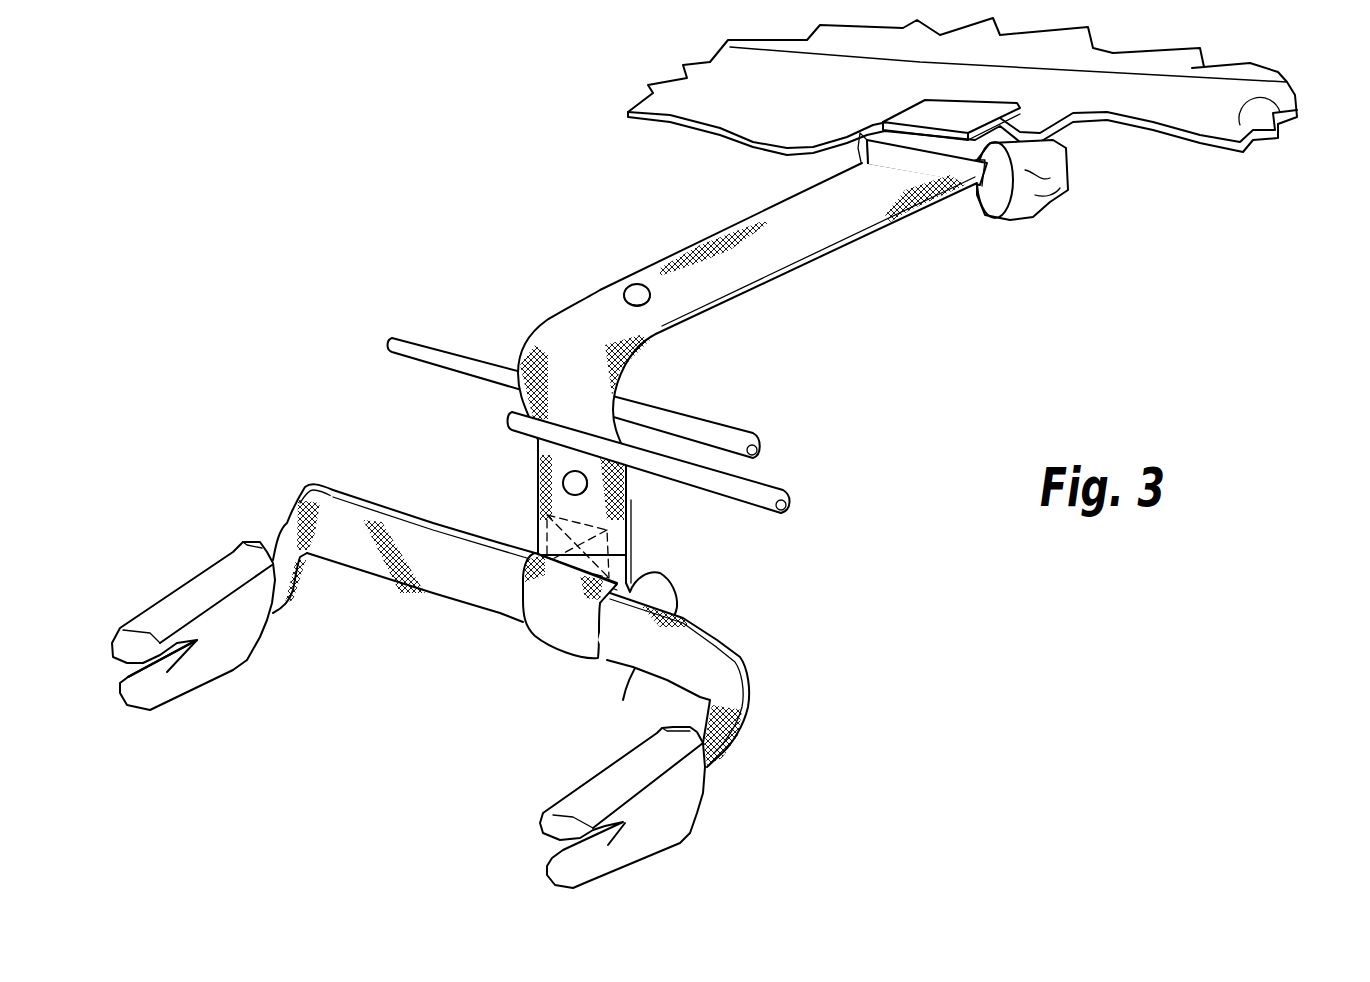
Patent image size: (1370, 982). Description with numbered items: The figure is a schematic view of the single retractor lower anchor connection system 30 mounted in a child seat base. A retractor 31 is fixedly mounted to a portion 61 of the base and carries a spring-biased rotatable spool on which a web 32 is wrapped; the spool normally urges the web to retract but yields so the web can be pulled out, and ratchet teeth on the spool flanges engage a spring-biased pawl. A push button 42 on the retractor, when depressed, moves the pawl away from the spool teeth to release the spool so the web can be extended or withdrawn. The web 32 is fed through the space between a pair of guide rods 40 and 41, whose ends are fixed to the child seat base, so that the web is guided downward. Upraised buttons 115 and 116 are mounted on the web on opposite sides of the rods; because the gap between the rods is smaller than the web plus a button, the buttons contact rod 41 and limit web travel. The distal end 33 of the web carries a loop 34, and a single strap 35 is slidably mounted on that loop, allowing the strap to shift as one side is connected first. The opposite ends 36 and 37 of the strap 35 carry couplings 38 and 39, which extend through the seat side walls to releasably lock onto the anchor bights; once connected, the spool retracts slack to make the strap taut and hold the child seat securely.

The single retractor lower anchor connection system 30 is at (928, 384).
The retractor 31 is at (1030, 172).
The web 32 is at (719, 447).
The distal end 33 is at (650, 632).
The loop 34 is at (527, 621).
The strap 35 is at (385, 588).
The end of strap 36 is at (290, 520).
The end of strap 37 is at (738, 740).
The coupling 38 is at (177, 612).
The coupling 39 is at (655, 820).
The guide rod 40 is at (725, 432).
The guide rod 41 is at (763, 492).
The push button 42 is at (943, 118).
The portion of the child seat base 61 is at (1286, 125).
The upraised button 115 is at (626, 285).
The upraised button 116 is at (560, 485).